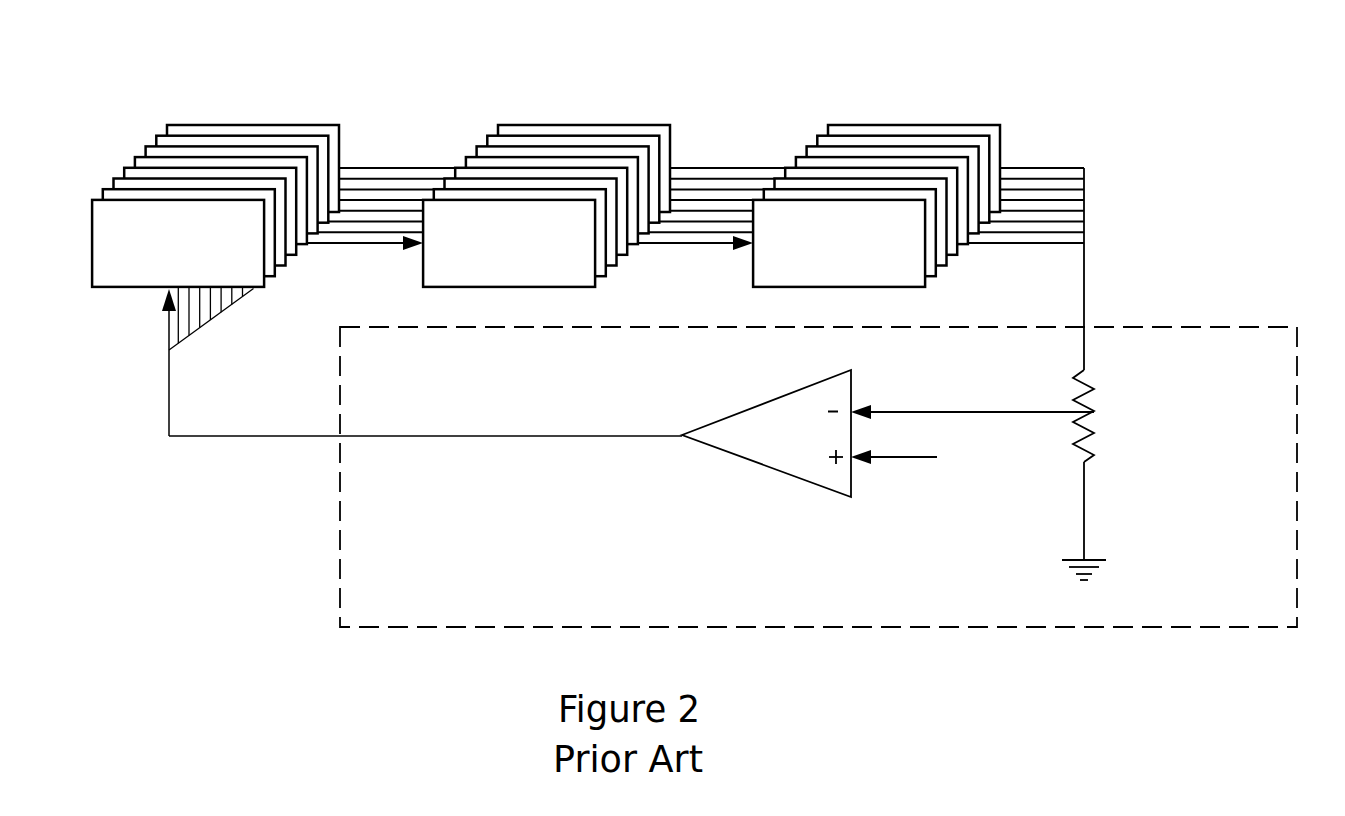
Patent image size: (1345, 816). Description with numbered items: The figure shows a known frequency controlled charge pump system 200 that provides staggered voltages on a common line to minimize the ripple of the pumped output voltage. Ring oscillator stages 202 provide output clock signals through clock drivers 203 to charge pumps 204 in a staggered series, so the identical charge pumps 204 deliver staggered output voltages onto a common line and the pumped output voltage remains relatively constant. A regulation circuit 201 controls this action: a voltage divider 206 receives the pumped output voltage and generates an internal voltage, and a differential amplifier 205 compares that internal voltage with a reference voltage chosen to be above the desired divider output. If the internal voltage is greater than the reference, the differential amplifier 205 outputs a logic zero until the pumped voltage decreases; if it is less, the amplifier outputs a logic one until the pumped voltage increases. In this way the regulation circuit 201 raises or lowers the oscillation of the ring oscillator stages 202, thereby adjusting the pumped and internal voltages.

The charge pump system 200 is at (1160, 165).
The regulation circuit 201 is at (968, 576).
The ring oscillator stages 202 is at (218, 127).
The clock drivers 203 is at (537, 124).
The charge pumps 204 is at (878, 123).
The differential amplifier 205 is at (732, 455).
The voltage divider 206 is at (1112, 408).